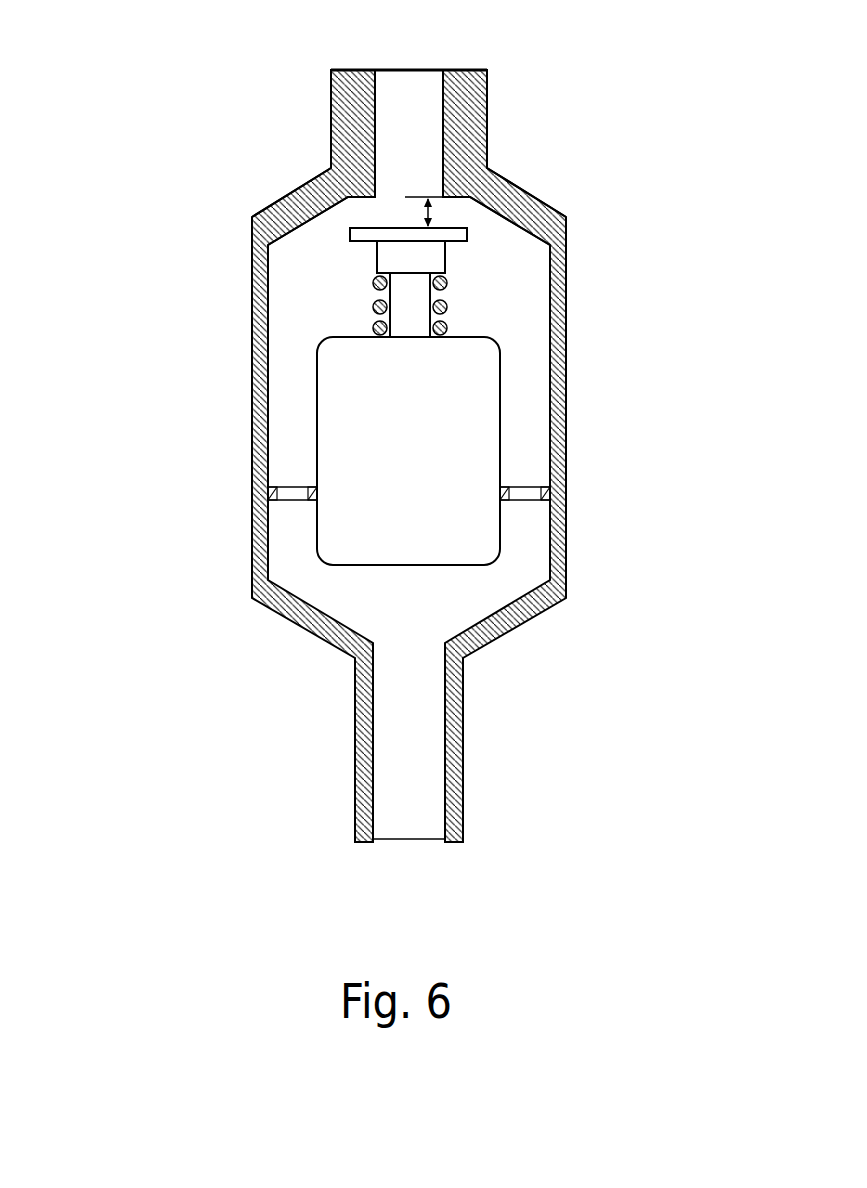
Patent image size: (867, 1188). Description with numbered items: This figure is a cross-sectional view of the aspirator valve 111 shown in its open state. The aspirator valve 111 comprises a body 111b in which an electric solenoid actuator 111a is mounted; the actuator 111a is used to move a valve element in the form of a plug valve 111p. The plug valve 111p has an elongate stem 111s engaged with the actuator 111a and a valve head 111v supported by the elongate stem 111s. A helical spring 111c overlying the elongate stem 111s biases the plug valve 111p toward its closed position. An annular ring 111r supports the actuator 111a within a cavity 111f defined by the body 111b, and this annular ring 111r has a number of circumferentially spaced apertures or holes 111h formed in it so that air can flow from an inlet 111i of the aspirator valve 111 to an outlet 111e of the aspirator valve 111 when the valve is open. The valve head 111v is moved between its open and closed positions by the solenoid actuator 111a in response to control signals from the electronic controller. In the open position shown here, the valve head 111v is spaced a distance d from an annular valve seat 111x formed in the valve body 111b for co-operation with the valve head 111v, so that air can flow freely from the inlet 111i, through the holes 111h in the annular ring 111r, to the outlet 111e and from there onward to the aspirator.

The aspirator valve 111 is at (332, 128).
The electric solenoid actuator 111a is at (438, 431).
The body 111b is at (318, 176).
The helical spring 111c is at (446, 306).
The outlet 111e is at (373, 773).
The cavity 111f is at (267, 333).
The holes 111h is at (275, 493).
The inlet 111i is at (442, 92).
The plug valve 111p is at (377, 252).
The annular ring 111r is at (293, 483).
The elongate stem 111s is at (413, 293).
The valve head 111v is at (467, 233).
The annular valve seat 111x is at (358, 199).
The distance d is at (419, 209).